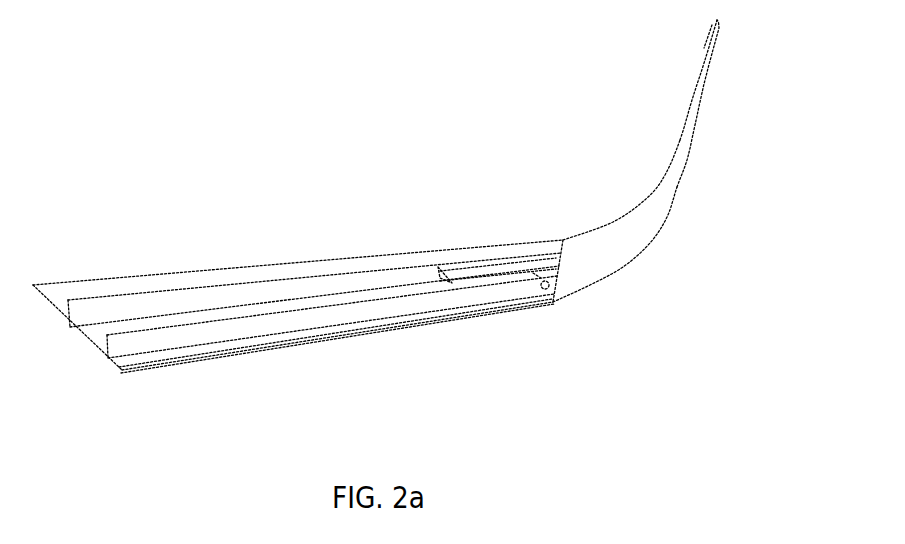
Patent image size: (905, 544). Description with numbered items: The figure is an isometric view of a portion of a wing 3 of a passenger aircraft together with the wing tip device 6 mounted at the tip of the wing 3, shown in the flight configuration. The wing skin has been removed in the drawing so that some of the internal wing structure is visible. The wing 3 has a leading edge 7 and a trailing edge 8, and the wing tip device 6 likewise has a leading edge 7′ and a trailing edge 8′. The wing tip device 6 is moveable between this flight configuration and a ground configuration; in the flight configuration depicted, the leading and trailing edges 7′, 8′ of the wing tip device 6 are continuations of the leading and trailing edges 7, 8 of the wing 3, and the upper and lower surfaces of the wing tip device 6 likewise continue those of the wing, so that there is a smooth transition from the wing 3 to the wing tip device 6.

The wing 3 is at (258, 338).
The wing tip device 6 is at (668, 163).
The leading edge 7 is at (388, 328).
The leading edge 7′ is at (623, 267).
The trailing edge 8 is at (247, 267).
The trailing edge 8′ is at (615, 222).